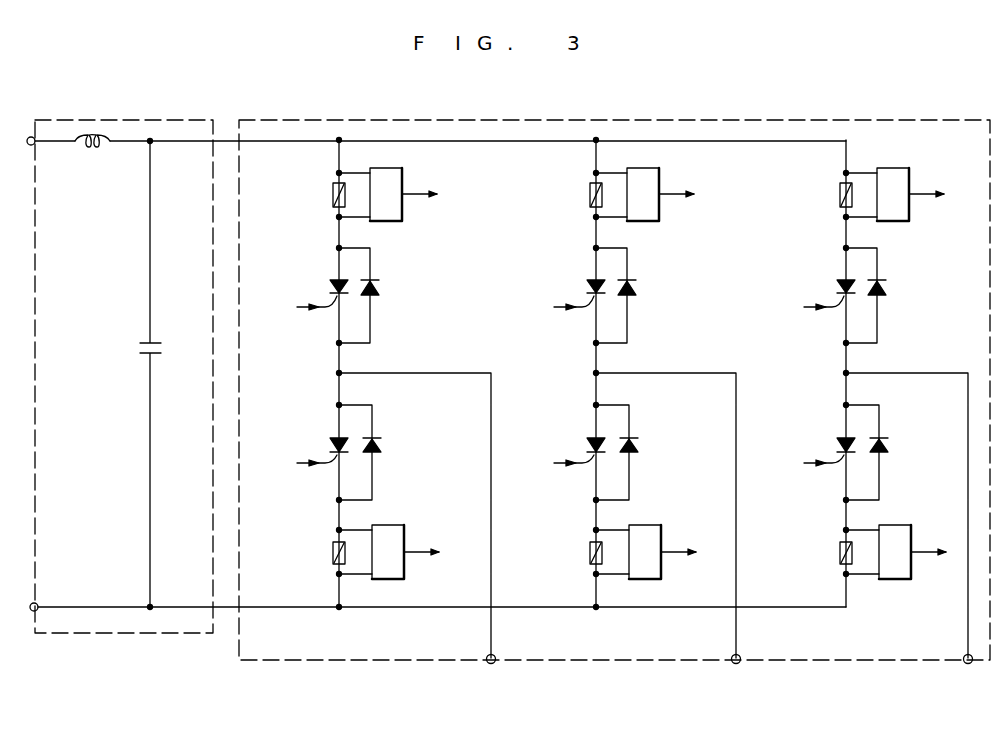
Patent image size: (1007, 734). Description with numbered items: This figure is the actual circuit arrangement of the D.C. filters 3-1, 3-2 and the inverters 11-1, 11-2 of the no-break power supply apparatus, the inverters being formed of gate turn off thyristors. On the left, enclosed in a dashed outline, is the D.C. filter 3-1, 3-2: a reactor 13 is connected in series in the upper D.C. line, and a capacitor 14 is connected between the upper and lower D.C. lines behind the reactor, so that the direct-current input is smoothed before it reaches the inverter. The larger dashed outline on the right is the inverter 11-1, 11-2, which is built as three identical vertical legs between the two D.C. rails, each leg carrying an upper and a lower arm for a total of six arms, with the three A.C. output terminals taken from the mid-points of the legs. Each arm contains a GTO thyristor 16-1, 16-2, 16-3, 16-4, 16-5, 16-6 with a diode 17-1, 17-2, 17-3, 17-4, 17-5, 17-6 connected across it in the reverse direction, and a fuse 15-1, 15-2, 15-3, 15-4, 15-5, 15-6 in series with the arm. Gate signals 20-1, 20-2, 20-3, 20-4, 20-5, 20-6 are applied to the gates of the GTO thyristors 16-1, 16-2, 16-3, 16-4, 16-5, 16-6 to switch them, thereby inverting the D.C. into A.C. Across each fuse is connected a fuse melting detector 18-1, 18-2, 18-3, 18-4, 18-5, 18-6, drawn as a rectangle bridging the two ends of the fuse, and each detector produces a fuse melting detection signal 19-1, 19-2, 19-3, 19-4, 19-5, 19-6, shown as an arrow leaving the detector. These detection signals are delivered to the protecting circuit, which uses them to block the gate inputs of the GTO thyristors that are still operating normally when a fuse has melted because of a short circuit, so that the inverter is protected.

The D.C. filter 3-1 is at (124, 353).
The D.C. filter 3-2 is at (127, 118).
The inverter 11-1 is at (614, 367).
The inverter 11-2 is at (324, 117).
The reactor 13 is at (92, 150).
The capacitor 14 is at (130, 357).
The fuse 15-1 is at (332, 196).
The fuse 15-2 is at (589, 196).
The fuse 15-3 is at (839, 196).
The fuse 15-4 is at (332, 553).
The fuse 15-5 is at (589, 553).
The fuse 15-6 is at (839, 553).
The GTO thyristor 16-1 is at (339, 291).
The GTO thyristor 16-2 is at (596, 291).
The GTO thyristor 16-3 is at (846, 291).
The GTO thyristor 16-4 is at (334, 450).
The GTO thyristor 16-5 is at (591, 450).
The GTO thyristor 16-6 is at (841, 450).
The diode 17-1 is at (380, 286).
The diode 17-2 is at (637, 286).
The diode 17-3 is at (887, 286).
The diode 17-4 is at (383, 449).
The diode 17-5 is at (640, 449).
The diode 17-6 is at (890, 449).
The fuse melting detector 18-1 is at (393, 182).
The fuse melting detector 18-2 is at (650, 182).
The fuse melting detector 18-3 is at (900, 182).
The fuse melting detector 18-4 is at (389, 528).
The fuse melting detector 18-5 is at (646, 528).
The fuse melting detector 18-6 is at (896, 528).
The fuse melting detection signal 19-1 is at (412, 198).
The fuse melting detection signal 19-2 is at (669, 198).
The fuse melting detection signal 19-3 is at (919, 198).
The fuse melting detection signal 19-4 is at (415, 556).
The fuse melting detection signal 19-5 is at (672, 556).
The fuse melting detection signal 19-6 is at (922, 556).
The gate signal 20-1 is at (303, 315).
The gate signal 20-2 is at (560, 315).
The gate signal 20-3 is at (810, 315).
The gate signal 20-4 is at (303, 474).
The gate signal 20-5 is at (560, 474).
The gate signal 20-6 is at (810, 474).